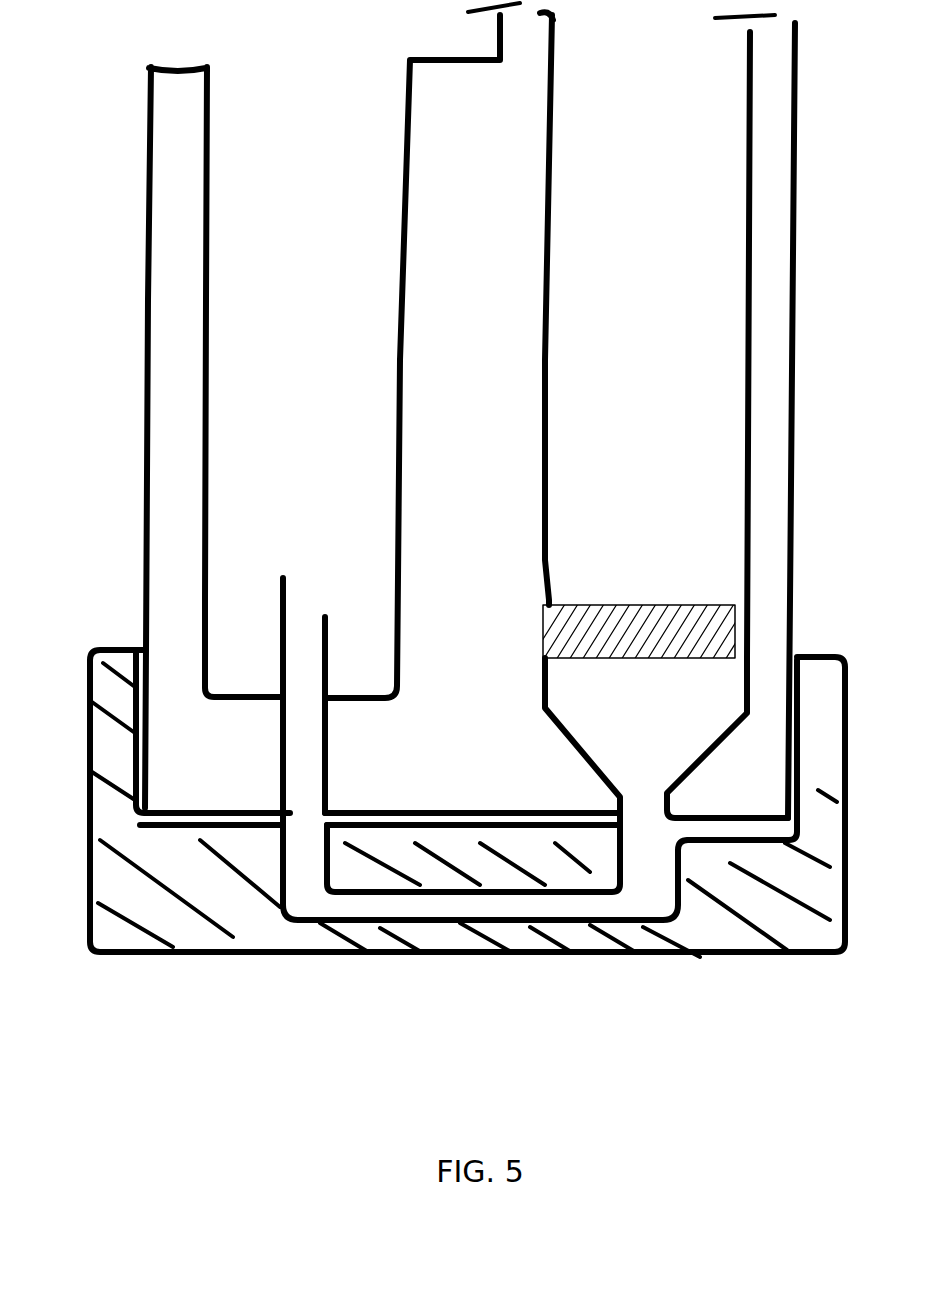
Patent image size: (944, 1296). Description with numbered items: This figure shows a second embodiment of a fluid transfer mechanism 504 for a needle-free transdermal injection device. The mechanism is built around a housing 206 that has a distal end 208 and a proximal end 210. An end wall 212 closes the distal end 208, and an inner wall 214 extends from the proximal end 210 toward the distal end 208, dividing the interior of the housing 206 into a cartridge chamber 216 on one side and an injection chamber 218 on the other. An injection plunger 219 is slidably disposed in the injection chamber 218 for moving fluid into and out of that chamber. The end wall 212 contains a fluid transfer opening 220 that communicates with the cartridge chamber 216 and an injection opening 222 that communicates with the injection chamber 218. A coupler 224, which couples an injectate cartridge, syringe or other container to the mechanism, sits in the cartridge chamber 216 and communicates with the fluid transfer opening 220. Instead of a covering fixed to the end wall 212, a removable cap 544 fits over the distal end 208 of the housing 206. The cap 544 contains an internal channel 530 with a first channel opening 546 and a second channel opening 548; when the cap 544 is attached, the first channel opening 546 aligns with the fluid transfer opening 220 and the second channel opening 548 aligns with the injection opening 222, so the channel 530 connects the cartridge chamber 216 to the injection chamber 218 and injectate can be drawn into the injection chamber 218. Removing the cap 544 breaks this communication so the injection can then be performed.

The fluid transfer mechanism 504 is at (152, 1098).
The housing 206 is at (143, 335).
The distal end 208 is at (143, 630).
The proximal end 210 is at (143, 82).
The end wall 212 is at (455, 812).
The inner wall 214 is at (490, 165).
The cartridge chamber 216 is at (320, 432).
The injection chamber 218 is at (650, 330).
The injection plunger 219 is at (543, 612).
The fluid transfer opening 220 is at (340, 705).
The injection opening 222 is at (612, 808).
The coupler 224 is at (280, 598).
The internal channel 530 is at (480, 893).
The removable cap 544 is at (800, 940).
The first channel opening 546 is at (300, 830).
The second channel opening 548 is at (637, 830).